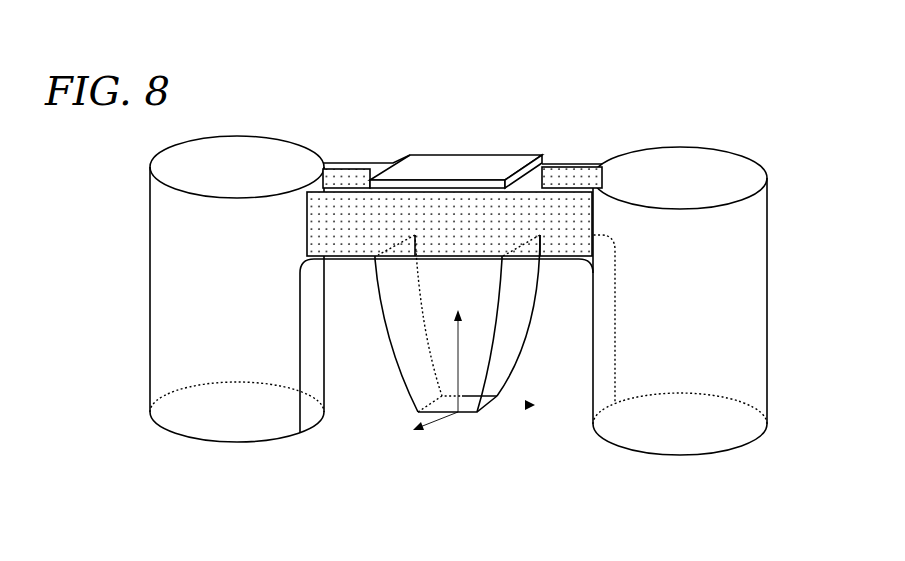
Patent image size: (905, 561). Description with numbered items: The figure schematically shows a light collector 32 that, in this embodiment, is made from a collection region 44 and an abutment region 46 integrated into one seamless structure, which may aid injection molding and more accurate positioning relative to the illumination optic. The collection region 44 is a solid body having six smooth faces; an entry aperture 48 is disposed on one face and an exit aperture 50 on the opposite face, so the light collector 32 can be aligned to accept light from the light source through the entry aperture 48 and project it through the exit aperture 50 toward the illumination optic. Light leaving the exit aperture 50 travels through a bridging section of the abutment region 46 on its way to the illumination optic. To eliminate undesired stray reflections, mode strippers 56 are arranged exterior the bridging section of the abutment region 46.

The light collector 32 is at (337, 67).
The collection region 44 is at (362, 495).
The abutment region 46 is at (142, 495).
The entry aperture 48 is at (445, 431).
The exit aperture 50 is at (493, 250).
The mode strippers 56 is at (307, 224).